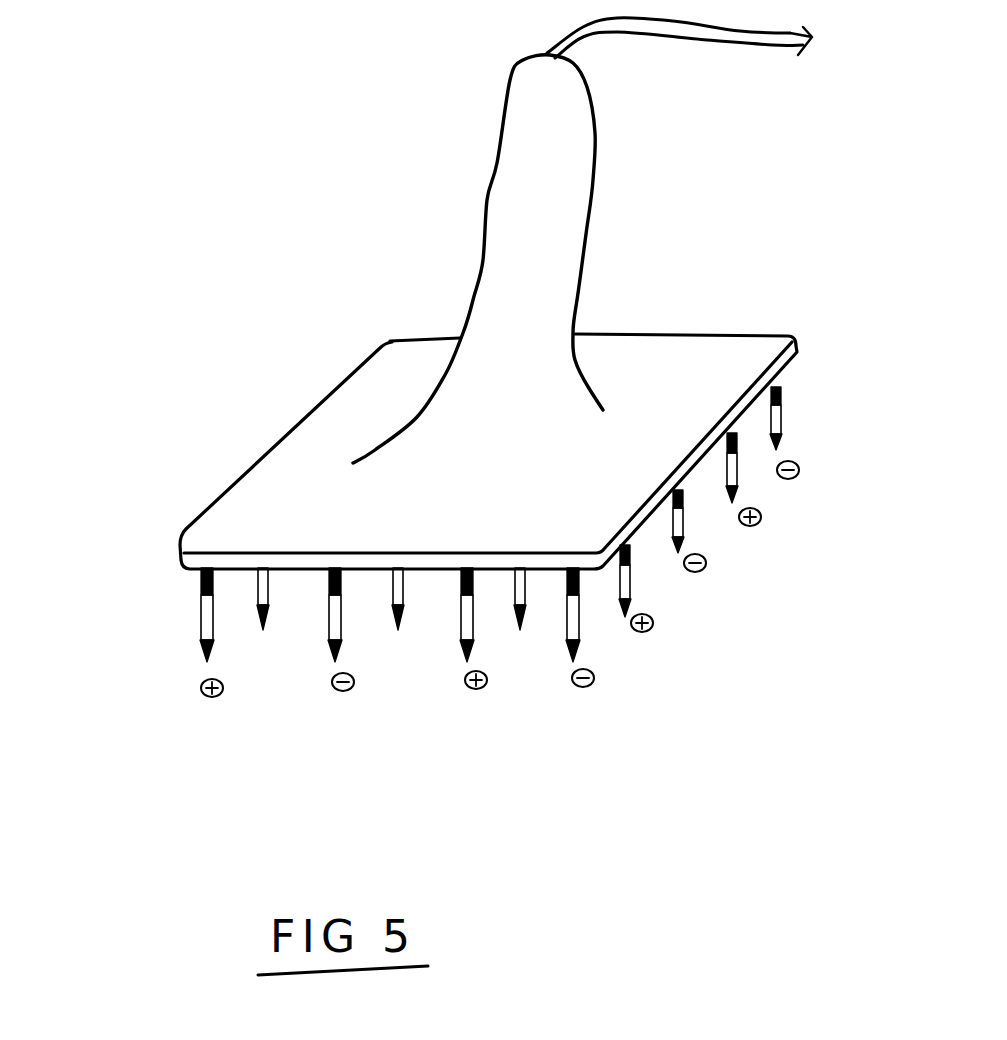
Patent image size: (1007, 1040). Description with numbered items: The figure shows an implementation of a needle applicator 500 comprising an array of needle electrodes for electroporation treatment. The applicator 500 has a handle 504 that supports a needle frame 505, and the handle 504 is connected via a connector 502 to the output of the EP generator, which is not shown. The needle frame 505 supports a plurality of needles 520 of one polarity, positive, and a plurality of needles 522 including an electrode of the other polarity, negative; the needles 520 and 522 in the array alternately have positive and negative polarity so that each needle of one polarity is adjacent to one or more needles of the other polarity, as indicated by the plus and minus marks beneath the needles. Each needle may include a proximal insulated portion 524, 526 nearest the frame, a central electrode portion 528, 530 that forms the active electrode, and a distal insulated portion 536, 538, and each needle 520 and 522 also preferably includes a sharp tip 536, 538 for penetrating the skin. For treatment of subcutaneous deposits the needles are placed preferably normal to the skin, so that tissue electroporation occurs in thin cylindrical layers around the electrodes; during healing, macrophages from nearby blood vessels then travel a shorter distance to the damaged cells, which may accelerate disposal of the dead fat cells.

The needle applicator 500 is at (449, 418).
The connector 502 is at (722, 43).
The handle 504 is at (563, 217).
The needle frame 505 is at (715, 367).
The needles of one polarity (positive) 520 is at (416, 594).
The needles of the other polarity (negative) 522 is at (516, 603).
The proximal insulated portion 524 is at (197, 582).
The proximal insulated portion 526 is at (328, 583).
The central electrode portion 528 is at (197, 622).
The central electrode portion 530 is at (327, 587).
The distal insulated portion / sharp tip 536 is at (202, 717).
The distal insulated portion / sharp tip 538 is at (327, 640).